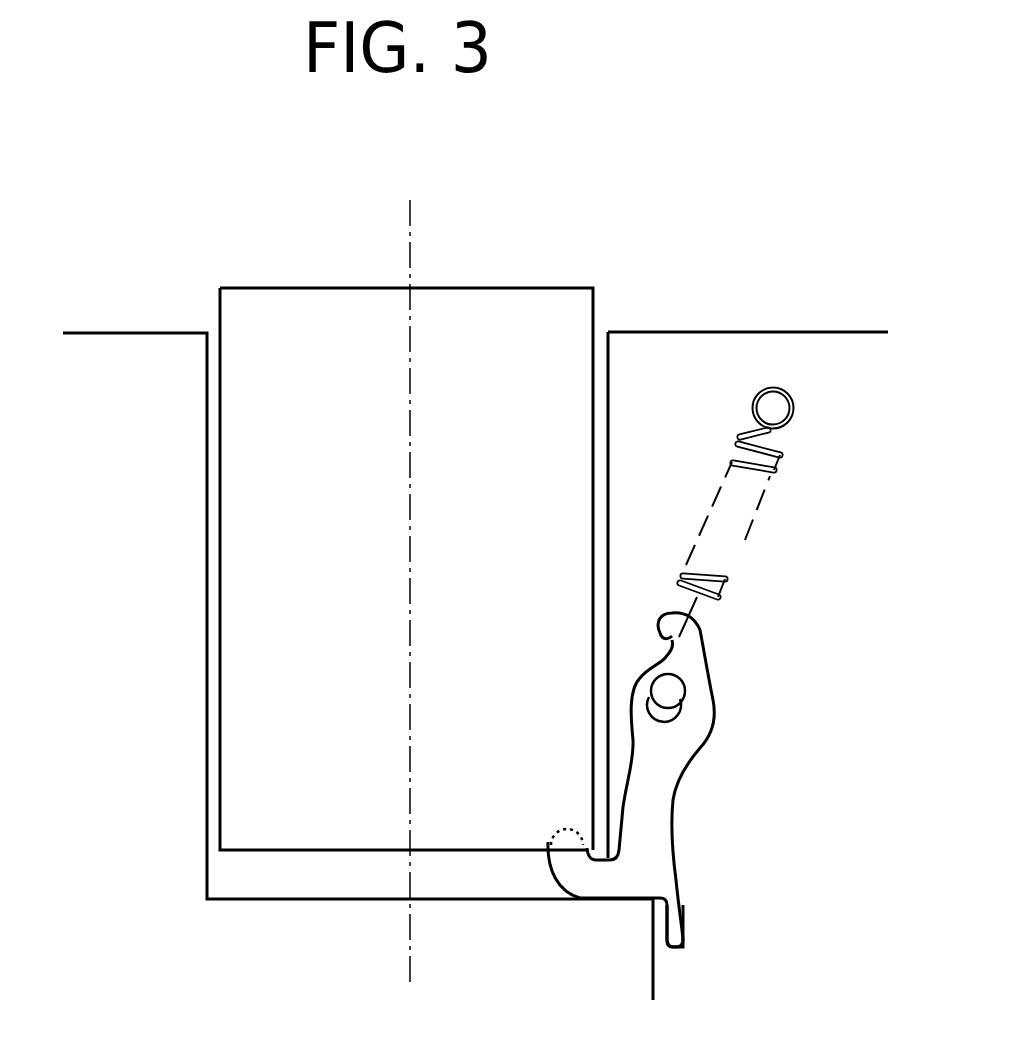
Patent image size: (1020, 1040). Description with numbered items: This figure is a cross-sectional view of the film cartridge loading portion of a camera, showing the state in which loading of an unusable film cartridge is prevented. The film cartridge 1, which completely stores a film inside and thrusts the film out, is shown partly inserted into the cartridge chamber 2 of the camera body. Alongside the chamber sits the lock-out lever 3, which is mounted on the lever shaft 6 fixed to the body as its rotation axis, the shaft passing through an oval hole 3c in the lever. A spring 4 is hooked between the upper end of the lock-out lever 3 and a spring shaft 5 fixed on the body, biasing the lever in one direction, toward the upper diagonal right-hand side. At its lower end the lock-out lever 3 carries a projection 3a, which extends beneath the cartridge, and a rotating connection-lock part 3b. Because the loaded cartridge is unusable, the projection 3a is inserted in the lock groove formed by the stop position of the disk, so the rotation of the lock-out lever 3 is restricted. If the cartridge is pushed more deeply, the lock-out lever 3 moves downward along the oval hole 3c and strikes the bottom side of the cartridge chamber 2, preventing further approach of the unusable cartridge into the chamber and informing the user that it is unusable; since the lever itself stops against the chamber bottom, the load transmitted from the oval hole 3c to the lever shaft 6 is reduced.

The film cartridge 1 is at (503, 300).
The cartridge chamber 2 is at (124, 345).
The lock-out lever 3 is at (661, 831).
The projection 3a is at (566, 838).
The rotating connection-lock part 3b is at (683, 945).
The oval hole 3c is at (693, 670).
The spring 4 is at (724, 566).
The spring shaft 5 is at (775, 410).
The lever shaft 6 is at (664, 688).